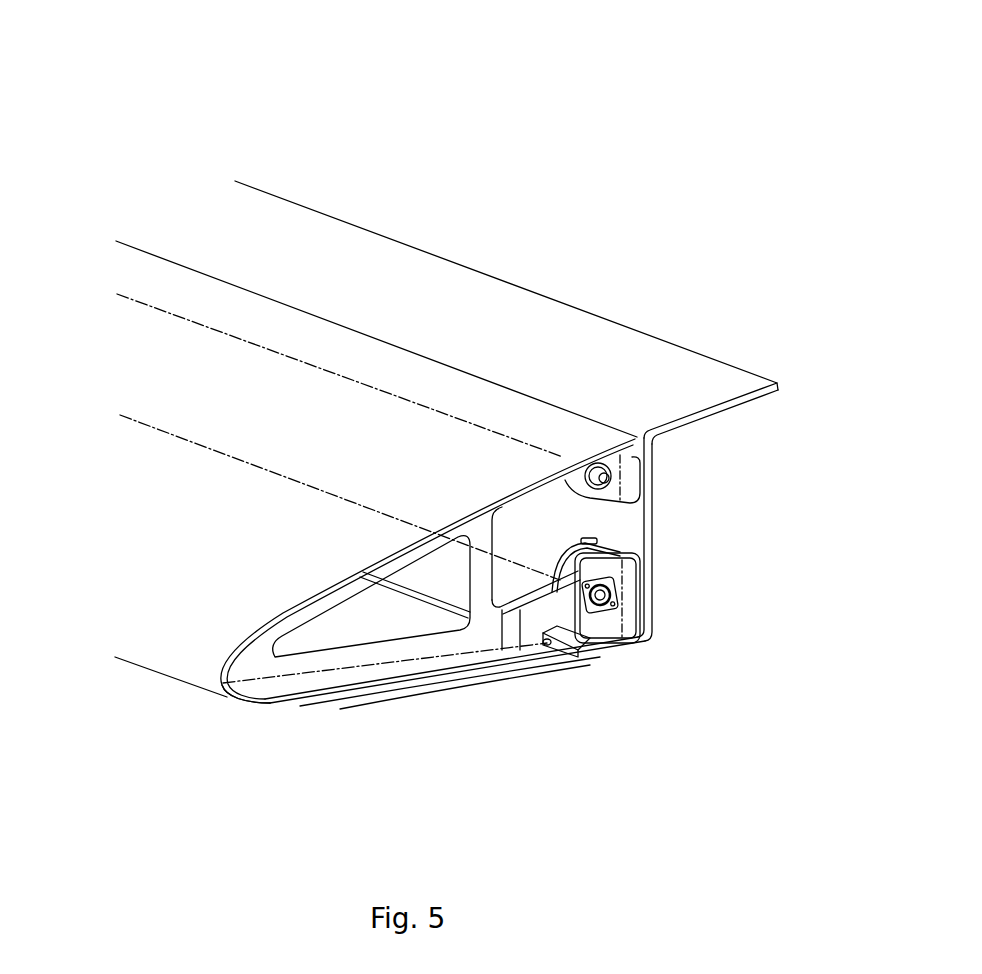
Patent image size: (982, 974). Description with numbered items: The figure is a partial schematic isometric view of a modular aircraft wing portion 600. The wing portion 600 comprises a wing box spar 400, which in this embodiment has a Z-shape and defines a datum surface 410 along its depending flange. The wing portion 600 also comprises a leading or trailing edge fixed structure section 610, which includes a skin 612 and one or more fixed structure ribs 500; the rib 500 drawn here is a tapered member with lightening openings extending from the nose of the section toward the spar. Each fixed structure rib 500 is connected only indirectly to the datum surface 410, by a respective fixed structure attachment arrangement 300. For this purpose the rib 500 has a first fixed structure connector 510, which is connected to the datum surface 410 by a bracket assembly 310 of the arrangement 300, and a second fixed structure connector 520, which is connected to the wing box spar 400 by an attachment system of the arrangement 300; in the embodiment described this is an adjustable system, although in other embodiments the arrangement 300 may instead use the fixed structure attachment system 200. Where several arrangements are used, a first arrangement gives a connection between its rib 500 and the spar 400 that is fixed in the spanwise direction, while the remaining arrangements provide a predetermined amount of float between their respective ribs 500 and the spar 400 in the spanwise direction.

The modular aircraft wing portion 600 is at (123, 173).
The wing box spar 400 is at (545, 310).
The datum surface 410 is at (620, 522).
The fixed structure rib 500 is at (380, 657).
The first fixed structure connector 510 is at (567, 477).
The second fixed structure connector 520 is at (557, 605).
The bracket assembly 310 is at (627, 478).
The fixed structure attachment arrangement 300 is at (636, 536).
The fixed structure attachment system 200 is at (628, 622).
The leading or trailing edge fixed structure section 610 is at (207, 588).
The skin 612 is at (310, 548).